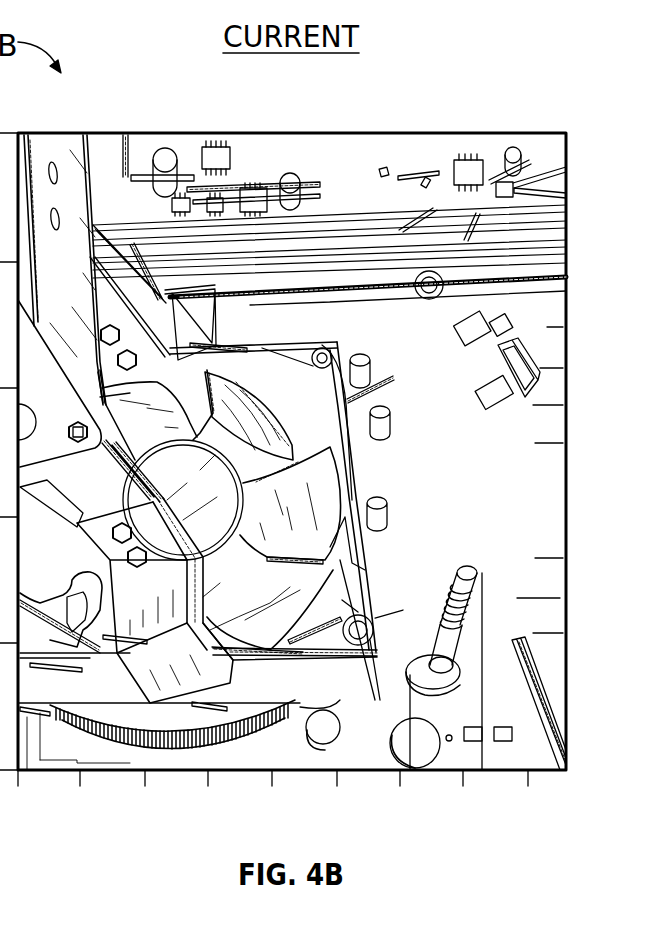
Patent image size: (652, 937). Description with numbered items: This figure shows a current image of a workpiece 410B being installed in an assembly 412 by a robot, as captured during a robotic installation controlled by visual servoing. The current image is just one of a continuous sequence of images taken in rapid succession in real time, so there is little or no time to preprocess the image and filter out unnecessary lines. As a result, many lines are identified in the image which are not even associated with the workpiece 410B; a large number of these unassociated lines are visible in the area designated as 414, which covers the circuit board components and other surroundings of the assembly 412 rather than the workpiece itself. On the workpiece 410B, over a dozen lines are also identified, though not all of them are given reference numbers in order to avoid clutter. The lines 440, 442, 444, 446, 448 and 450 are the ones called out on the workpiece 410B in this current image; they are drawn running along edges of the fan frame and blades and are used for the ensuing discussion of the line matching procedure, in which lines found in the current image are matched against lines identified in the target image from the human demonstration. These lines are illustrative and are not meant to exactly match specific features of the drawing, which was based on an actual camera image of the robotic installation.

The workpiece 410B is at (383, 554).
The assembly 412 is at (452, 745).
The area of unassociated lines 414 is at (362, 158).
The line 440 is at (215, 335).
The line 442 is at (258, 388).
The line 444 is at (330, 517).
The line 446 is at (250, 482).
The line 448 is at (297, 560).
The line 450 is at (320, 630).